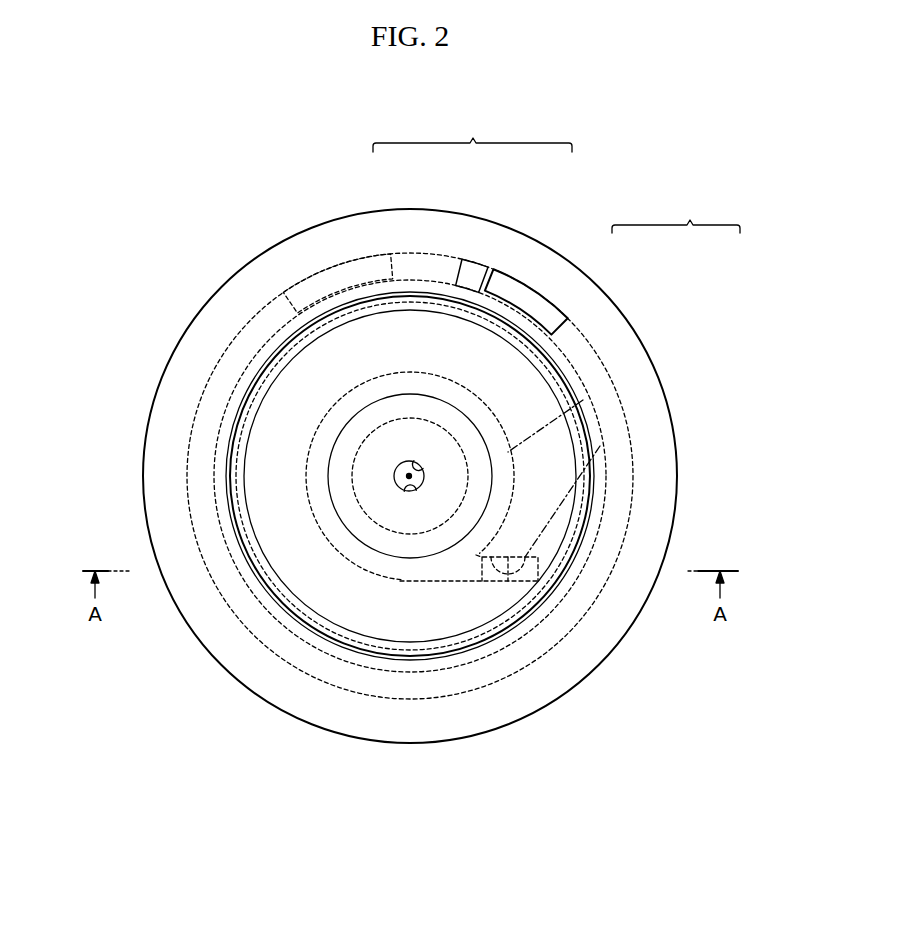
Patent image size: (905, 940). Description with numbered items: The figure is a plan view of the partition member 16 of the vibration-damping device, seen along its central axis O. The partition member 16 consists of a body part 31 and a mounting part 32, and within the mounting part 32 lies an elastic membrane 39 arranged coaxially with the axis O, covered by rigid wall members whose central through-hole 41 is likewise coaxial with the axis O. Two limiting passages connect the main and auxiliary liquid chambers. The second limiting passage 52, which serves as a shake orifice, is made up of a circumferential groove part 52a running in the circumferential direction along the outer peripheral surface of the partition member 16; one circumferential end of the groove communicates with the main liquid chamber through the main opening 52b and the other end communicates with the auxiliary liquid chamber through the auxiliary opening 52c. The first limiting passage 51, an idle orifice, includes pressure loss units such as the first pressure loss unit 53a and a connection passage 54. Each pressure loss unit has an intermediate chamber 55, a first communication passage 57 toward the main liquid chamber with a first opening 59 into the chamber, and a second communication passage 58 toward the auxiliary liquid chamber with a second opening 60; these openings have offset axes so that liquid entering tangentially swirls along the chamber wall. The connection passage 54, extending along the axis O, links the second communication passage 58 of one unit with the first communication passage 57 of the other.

The partition member 16 is at (192, 170).
The body part 31 is at (178, 330).
The mounting part 32 is at (226, 431).
The through-hole 41 is at (338, 475).
The elastic membrane 39 is at (374, 536).
The first limiting passage 51 is at (434, 592).
The axis O is at (403, 466).
The second limiting passage 52 is at (472, 132).
The circumferential groove part 52a is at (572, 316).
The main opening 52b is at (487, 260).
The auxiliary opening 52c is at (380, 254).
The first pressure loss unit 53a is at (680, 214).
The intermediate chamber 55 is at (580, 407).
The first communication passage 57 is at (414, 462).
The second communication passage 58 is at (600, 446).
The first opening 59 is at (417, 494).
The second opening 60 is at (482, 582).
The connection passage 54 is at (522, 583).